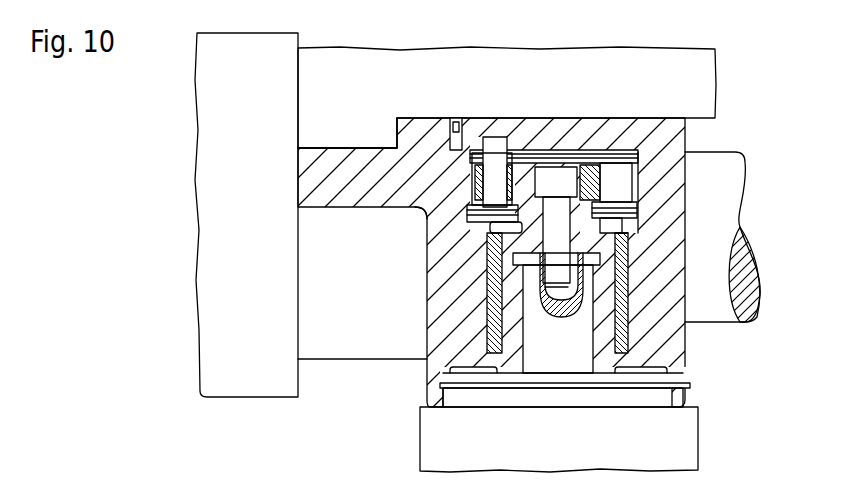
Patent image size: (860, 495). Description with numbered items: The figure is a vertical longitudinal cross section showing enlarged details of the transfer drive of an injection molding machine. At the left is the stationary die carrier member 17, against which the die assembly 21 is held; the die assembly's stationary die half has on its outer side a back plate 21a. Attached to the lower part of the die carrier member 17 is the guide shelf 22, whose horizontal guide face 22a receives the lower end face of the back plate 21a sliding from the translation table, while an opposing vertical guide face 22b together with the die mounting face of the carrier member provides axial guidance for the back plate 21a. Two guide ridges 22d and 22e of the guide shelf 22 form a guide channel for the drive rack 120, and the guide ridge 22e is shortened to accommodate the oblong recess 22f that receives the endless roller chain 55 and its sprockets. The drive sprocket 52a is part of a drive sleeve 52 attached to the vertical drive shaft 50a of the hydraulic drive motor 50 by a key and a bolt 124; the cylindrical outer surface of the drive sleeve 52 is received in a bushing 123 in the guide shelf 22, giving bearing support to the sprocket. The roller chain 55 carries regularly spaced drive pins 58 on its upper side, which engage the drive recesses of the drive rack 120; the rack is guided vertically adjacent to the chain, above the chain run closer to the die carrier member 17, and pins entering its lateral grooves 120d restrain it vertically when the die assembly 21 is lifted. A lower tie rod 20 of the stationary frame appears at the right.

The stationary die carrier member 17 is at (225, 200).
The lower tie rods 20 is at (718, 307).
The die assembly 21 is at (558, 78).
The back plate 21a is at (350, 92).
The guide shelf 22 is at (448, 317).
The horizontal guide face 22a is at (300, 146).
The vertical guide face 22b is at (396, 136).
The guide ridge 22d is at (428, 138).
The guide ridge 22e is at (524, 148).
The oblong recess 22f is at (665, 160).
The hydraulic drive motor 50 is at (453, 439).
The vertical drive shaft 50a is at (565, 353).
The drive sleeve 52 is at (487, 272).
The drive sprocket 52a is at (560, 148).
The endless roller chain 55 is at (648, 150).
The drive pins 58 is at (530, 150).
The drive rack 120 is at (455, 135).
The lateral grooves 120d is at (400, 207).
The bushing 123 is at (628, 338).
The bolt 124 is at (630, 238).